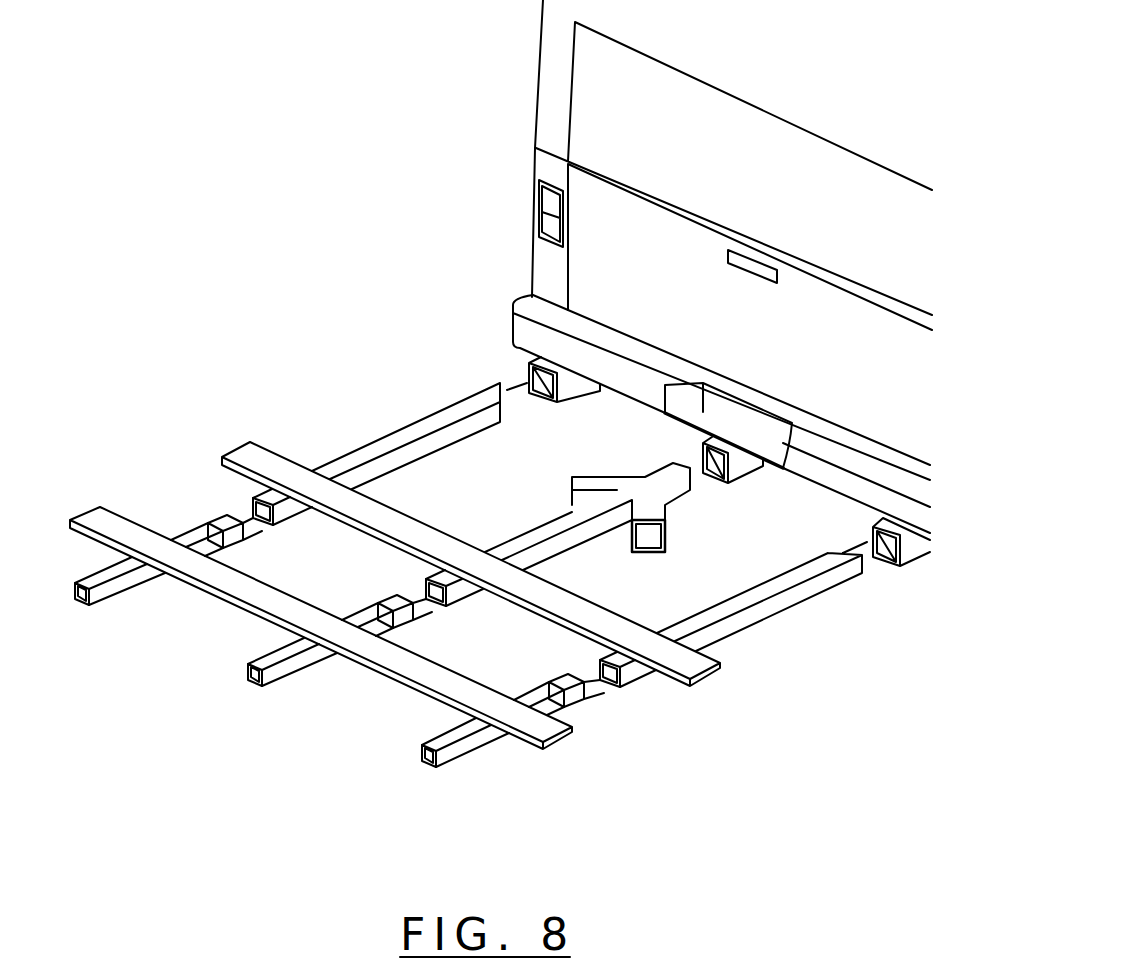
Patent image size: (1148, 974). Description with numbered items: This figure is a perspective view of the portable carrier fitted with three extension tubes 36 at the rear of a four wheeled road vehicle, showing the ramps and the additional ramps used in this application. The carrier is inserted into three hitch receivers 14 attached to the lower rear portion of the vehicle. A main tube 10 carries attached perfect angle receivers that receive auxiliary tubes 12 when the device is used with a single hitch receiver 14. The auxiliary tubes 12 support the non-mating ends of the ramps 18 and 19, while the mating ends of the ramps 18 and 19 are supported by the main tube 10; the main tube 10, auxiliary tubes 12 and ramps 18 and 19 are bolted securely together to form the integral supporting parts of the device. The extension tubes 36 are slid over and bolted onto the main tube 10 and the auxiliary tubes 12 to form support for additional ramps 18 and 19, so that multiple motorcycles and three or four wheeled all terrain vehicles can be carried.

The main tube 10 is at (608, 478).
The auxiliary tube 12 is at (410, 425).
The hitch receiver 14 is at (543, 400).
The ramp 18 is at (397, 548).
The ramp 19 is at (562, 630).
The extension tube 36 is at (82, 604).